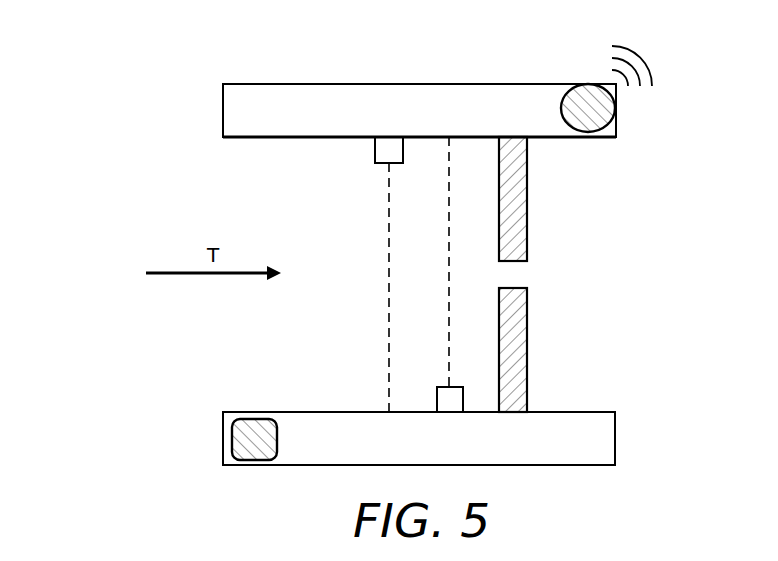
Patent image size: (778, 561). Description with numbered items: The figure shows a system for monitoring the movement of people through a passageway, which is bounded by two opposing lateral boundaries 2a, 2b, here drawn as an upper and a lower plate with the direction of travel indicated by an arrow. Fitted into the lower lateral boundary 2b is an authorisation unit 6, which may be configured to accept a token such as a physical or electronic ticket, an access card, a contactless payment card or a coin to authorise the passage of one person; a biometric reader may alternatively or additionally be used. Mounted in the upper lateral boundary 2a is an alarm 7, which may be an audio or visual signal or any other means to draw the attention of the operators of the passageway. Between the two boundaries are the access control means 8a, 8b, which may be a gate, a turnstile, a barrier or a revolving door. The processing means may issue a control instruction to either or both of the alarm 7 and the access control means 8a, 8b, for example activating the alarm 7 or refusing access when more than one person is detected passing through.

The lateral boundary 2a is at (223, 98).
The lateral boundary 2b is at (616, 428).
The authorisation unit 6 is at (232, 437).
The alarm 7 is at (563, 94).
The access control means 8a is at (528, 228).
The access control means 8b is at (528, 325).